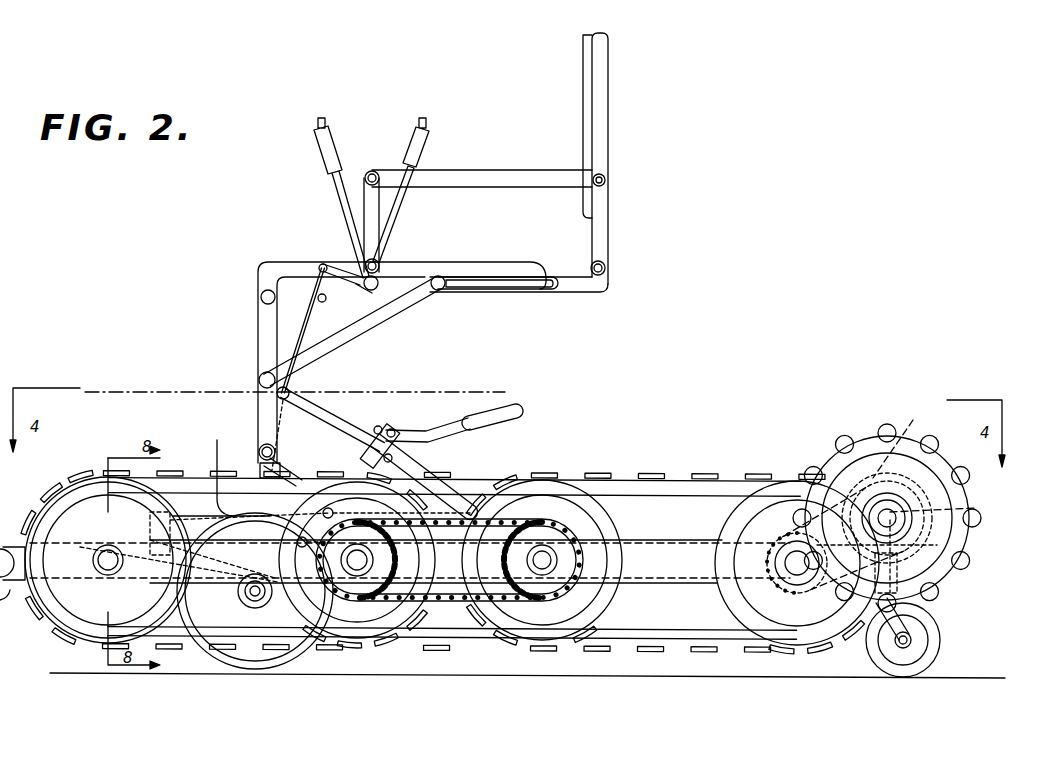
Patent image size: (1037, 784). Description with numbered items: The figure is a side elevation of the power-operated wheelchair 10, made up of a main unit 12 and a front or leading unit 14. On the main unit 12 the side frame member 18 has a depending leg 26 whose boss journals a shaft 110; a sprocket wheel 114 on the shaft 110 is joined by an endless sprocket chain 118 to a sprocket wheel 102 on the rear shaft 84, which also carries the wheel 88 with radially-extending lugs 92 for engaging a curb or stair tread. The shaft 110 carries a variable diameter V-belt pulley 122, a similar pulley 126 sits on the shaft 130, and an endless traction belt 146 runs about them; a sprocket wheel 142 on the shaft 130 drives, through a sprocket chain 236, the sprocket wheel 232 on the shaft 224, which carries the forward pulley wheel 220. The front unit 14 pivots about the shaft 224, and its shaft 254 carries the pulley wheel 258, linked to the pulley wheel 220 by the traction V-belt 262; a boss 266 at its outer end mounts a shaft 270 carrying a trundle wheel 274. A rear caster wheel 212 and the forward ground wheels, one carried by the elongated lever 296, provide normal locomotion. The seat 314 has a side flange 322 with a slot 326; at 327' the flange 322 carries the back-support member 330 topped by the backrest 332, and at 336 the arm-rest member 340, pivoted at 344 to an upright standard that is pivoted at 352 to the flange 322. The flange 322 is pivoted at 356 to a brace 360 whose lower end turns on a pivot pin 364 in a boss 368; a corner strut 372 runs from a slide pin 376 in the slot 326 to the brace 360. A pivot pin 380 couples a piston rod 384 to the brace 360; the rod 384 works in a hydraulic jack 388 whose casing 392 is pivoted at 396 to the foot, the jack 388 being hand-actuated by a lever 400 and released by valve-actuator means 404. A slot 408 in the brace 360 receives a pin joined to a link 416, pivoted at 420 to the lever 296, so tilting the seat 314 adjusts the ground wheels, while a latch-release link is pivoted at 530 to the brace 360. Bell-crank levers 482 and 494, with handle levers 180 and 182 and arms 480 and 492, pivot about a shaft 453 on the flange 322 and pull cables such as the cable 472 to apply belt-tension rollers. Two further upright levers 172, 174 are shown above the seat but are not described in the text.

The power-operated wheelchair 10 is at (565, 430).
The main unit 12 is at (770, 440).
The front unit 14 is at (210, 437).
The side frame member 18 is at (634, 586).
The leg 26 is at (680, 580).
The shaft 84 is at (887, 518).
The wheel 88 is at (935, 472).
The lugs 92 is at (932, 444).
The sprocket wheel 102 is at (943, 458).
The shaft 110 is at (795, 598).
The sprocket wheel 114 is at (760, 580).
The endless sprocket chain 118 is at (792, 536).
The variable diameter V-belt pulley 122 is at (790, 632).
The variable diameter pulley 126 is at (590, 617).
The shaft 130 is at (545, 560).
The sprocket wheel 142 is at (592, 538).
The endless traction belt 146 is at (690, 480).
The control lever 172 is at (424, 118).
The control lever 174 is at (320, 118).
The handle lever 180 is at (428, 188).
The lever 182 is at (338, 208).
The caster wheel 212 is at (940, 652).
The adjustable-diameter V-belt pulley wheel 220 is at (367, 625).
The shaft 224 is at (328, 616).
The sprocket wheel 232 is at (360, 566).
The sprocket chain 236 is at (460, 600).
The shaft 254 is at (105, 565).
The adjustable-diameter pulley wheel 258 is at (52, 626).
The endless traction V-belt 262 is at (210, 660).
The boss 266 is at (15, 543).
The shaft 270 is at (12, 598).
The trundle wheel 274 is at (8, 612).
The lever 296 is at (264, 600).
The seat 314 is at (625, 193).
The side flange 322 is at (548, 293).
The slot 326 is at (508, 292).
The pivotal connection 327' is at (627, 272).
The seat back-support member 330 is at (608, 140).
The backrest 332 is at (583, 130).
The pivotal connection 336 is at (606, 176).
The arm-rest member 340 is at (496, 170).
The pivotal connection 344 is at (372, 171).
The pivotal connection 352 is at (380, 264).
The pivotal connection 356 is at (262, 300).
The brace 360 is at (258, 350).
The pivot pin 364 is at (268, 568).
The boss 368 is at (219, 438).
The corner strut 372 is at (350, 330).
The slide pin 376 is at (446, 276).
The pivot pin 380 is at (292, 390).
The piston rod 384 is at (335, 420).
The hydraulic jack 388 is at (445, 490).
The casing 392 is at (405, 468).
The pivotal connection 396 is at (565, 482).
The lever 400 is at (470, 422).
The valve-actuator means 404 is at (392, 455).
The slot 408 is at (258, 470).
The link 416 is at (292, 480).
The pivotal connection 420 is at (355, 504).
The shaft 453 is at (410, 312).
The cable 472 is at (310, 332).
The arm 480 is at (360, 292).
The bell-crank lever 482 is at (405, 209).
The arm 492 is at (336, 270).
The bell-crank lever 494 is at (328, 199).
The pivotal connection 530 is at (310, 513).